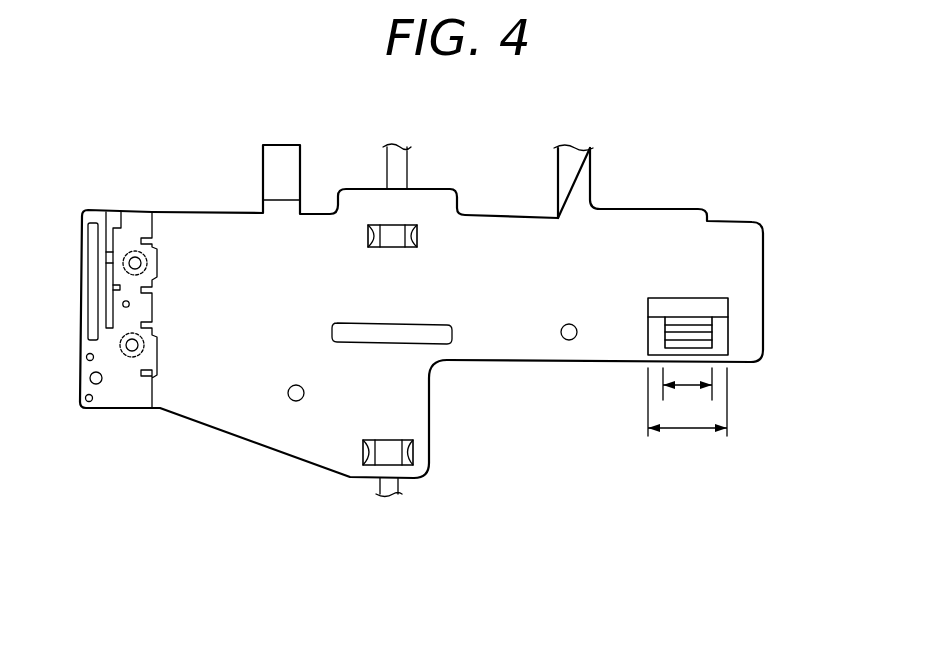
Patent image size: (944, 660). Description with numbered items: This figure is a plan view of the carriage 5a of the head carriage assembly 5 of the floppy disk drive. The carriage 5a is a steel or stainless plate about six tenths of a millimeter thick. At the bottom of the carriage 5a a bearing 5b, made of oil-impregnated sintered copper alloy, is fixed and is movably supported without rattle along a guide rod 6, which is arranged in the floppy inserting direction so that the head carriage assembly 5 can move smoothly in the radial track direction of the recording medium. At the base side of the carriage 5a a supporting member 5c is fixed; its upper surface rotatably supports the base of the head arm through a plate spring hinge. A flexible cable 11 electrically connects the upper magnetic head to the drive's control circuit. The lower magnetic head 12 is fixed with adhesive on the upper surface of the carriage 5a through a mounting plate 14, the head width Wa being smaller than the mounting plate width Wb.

The head carriage assembly 5 is at (472, 317).
The carriage 5a is at (740, 230).
The bearing 5b is at (397, 232).
The supporting member 5c is at (139, 213).
The guide rod 6 is at (393, 168).
The flexible cable 11 is at (583, 173).
The lower magnetic head 12 is at (708, 345).
The mounting plate 14 is at (722, 312).